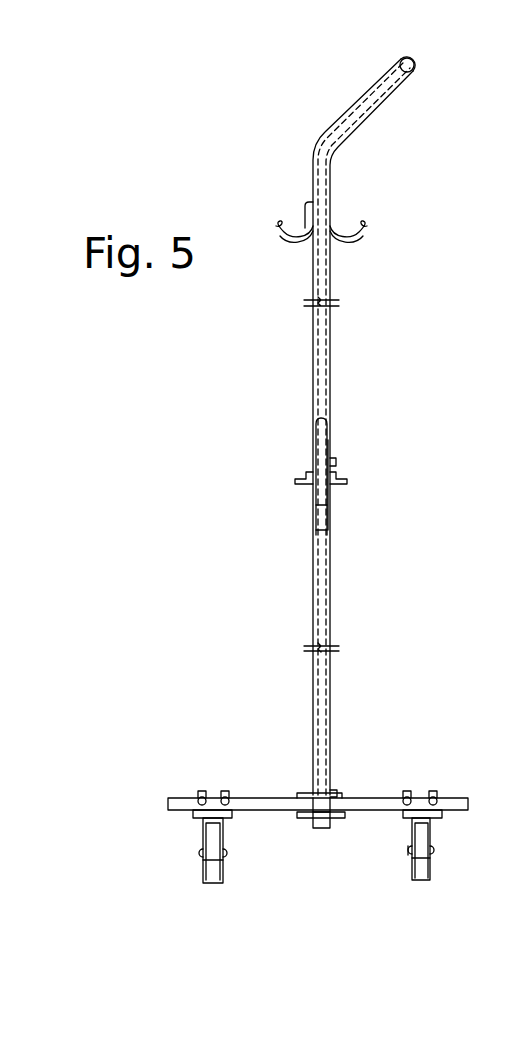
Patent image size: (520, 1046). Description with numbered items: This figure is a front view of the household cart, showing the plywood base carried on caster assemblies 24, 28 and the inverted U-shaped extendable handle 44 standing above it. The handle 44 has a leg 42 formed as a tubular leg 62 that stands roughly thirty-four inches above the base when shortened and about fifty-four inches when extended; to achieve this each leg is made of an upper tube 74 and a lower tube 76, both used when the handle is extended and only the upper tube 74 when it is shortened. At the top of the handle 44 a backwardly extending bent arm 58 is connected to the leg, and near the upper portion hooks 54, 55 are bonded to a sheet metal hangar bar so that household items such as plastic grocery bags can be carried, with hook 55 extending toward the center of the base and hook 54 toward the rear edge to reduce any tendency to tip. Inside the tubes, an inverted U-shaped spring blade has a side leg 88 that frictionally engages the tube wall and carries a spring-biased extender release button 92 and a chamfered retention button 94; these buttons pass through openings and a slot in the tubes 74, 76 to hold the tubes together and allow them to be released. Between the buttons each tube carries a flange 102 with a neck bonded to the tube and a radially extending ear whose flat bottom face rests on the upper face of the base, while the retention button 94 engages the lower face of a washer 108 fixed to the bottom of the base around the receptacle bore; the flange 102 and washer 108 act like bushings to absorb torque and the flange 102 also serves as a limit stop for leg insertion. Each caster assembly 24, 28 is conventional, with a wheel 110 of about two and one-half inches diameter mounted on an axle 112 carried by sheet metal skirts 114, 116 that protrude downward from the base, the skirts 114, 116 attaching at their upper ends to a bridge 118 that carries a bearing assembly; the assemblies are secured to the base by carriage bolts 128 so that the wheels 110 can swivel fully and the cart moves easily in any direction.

The caster assembly 24 is at (430, 870).
The caster assembly 28 is at (218, 873).
The leg 42 is at (320, 690).
The extendable handle 44 is at (308, 592).
The hook 54 is at (352, 230).
The hook 55 is at (282, 230).
The bent arm 58 is at (366, 112).
The tubular leg 62 is at (412, 72).
The upper tube 74 is at (317, 345).
The tube 76 is at (328, 626).
The side leg 88 is at (322, 440).
The extender release button 92 is at (336, 462).
The chamfered retention button 94 is at (332, 497).
The flange 102 is at (306, 480).
The washer 108 is at (310, 820).
The wheel 110 is at (205, 866).
The axle 112 is at (410, 851).
The skirt 114 is at (198, 832).
The skirt 116 is at (224, 828).
The bridge 118 is at (421, 800).
The carriage bolt 128 is at (224, 798).